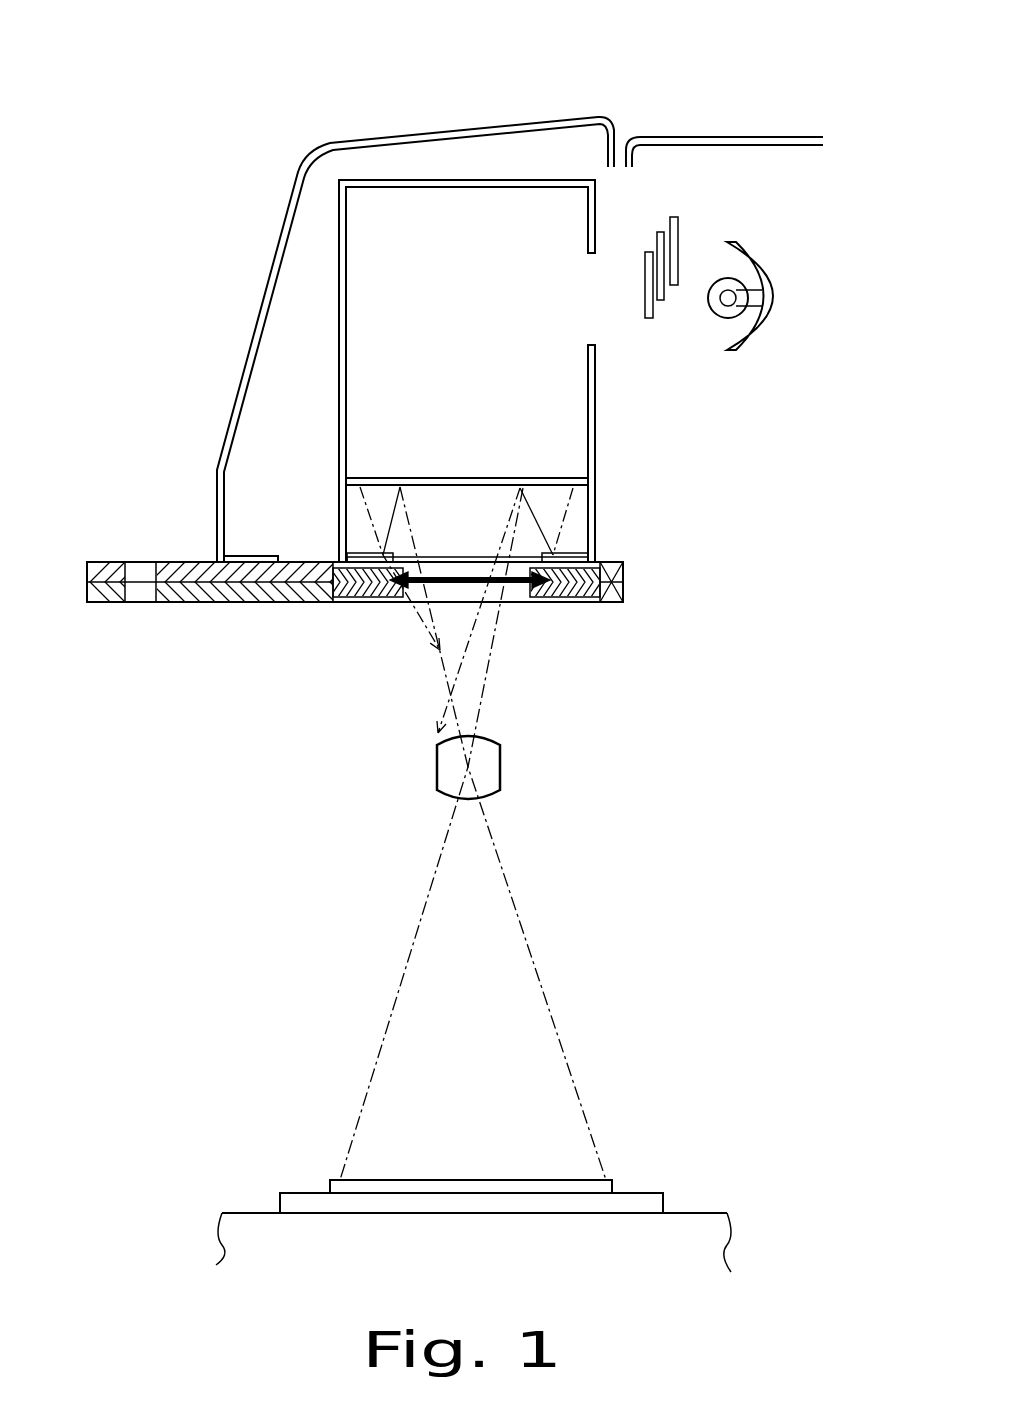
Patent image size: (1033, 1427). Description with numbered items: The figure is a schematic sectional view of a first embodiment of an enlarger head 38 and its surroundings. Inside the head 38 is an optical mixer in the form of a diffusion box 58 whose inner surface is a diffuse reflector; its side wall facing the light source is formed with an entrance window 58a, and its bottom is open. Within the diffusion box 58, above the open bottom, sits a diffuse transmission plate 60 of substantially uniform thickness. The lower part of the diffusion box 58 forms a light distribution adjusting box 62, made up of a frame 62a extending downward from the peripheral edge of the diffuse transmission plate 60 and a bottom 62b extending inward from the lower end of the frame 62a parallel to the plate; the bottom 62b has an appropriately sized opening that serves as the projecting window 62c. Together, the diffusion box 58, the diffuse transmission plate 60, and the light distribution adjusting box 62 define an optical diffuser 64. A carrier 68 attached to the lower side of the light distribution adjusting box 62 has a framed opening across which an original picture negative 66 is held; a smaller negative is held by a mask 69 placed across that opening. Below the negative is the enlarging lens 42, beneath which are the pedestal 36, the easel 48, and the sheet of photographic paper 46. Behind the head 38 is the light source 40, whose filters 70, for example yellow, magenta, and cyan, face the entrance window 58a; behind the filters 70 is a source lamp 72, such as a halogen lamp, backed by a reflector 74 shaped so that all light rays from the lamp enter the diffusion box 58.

The pedestal 36 is at (682, 1227).
The head 38 is at (290, 145).
The light source 40 is at (726, 116).
The enlarging lens 42 is at (487, 765).
The sheet of photographic paper 46 is at (585, 1190).
The easel 48 is at (287, 1207).
The diffusion box 58 is at (416, 371).
The entrance window 58a is at (591, 345).
The diffuse transmission plate 60 is at (453, 477).
The light distribution adjusting box 62 is at (541, 759).
The frame 62a is at (544, 426).
The bottom 62b is at (567, 552).
The projecting window 62c is at (427, 597).
The optical diffuser 64 is at (292, 413).
The original picture negative 66 is at (523, 590).
The carrier 68 is at (188, 602).
The mask 69 is at (365, 602).
The filters 70 is at (698, 196).
The source lamp 72 is at (713, 310).
The reflector 74 is at (762, 327).